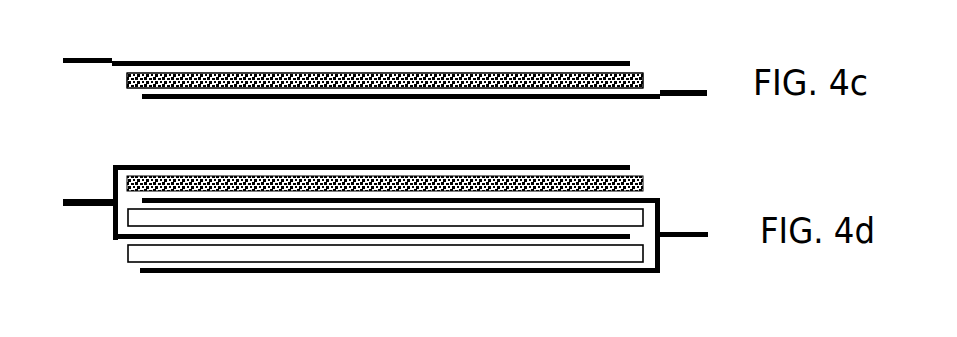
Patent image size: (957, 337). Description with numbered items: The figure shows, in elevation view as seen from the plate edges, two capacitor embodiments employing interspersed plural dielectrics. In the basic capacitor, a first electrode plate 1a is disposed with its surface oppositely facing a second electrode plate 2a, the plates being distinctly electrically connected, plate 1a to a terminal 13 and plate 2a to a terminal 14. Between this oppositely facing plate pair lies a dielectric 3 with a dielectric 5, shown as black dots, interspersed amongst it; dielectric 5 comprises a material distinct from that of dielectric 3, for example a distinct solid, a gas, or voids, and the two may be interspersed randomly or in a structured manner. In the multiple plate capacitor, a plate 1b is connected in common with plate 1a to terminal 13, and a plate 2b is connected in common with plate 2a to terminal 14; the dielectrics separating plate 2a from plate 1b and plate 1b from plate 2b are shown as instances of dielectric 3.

In FIG. 4c, the first electrode plate 1a is at (530, 62).
In FIG. 4d, the first electrode plate 1a is at (532, 165).
In FIG. 4d, the plate 1b is at (497, 238).
In FIG. 4c, the second electrode plate 2a is at (565, 97).
In FIG. 4d, the second electrode plate 2a is at (567, 200).
In FIG. 4d, the plate 2b is at (580, 272).
In FIG. 4c, the dielectric 3 is at (225, 78).
In FIG. 4d, the dielectric 3 is at (135, 255).
In FIG. 4c, the dielectric 5 is at (280, 82).
In FIG. 4d, the dielectric 5 is at (266, 192).
In FIG. 4c, the terminal 13 is at (90, 58).
In FIG. 4d, the terminal 13 is at (90, 198).
In FIG. 4c, the terminal 14 is at (685, 91).
In FIG. 4d, the terminal 14 is at (688, 232).